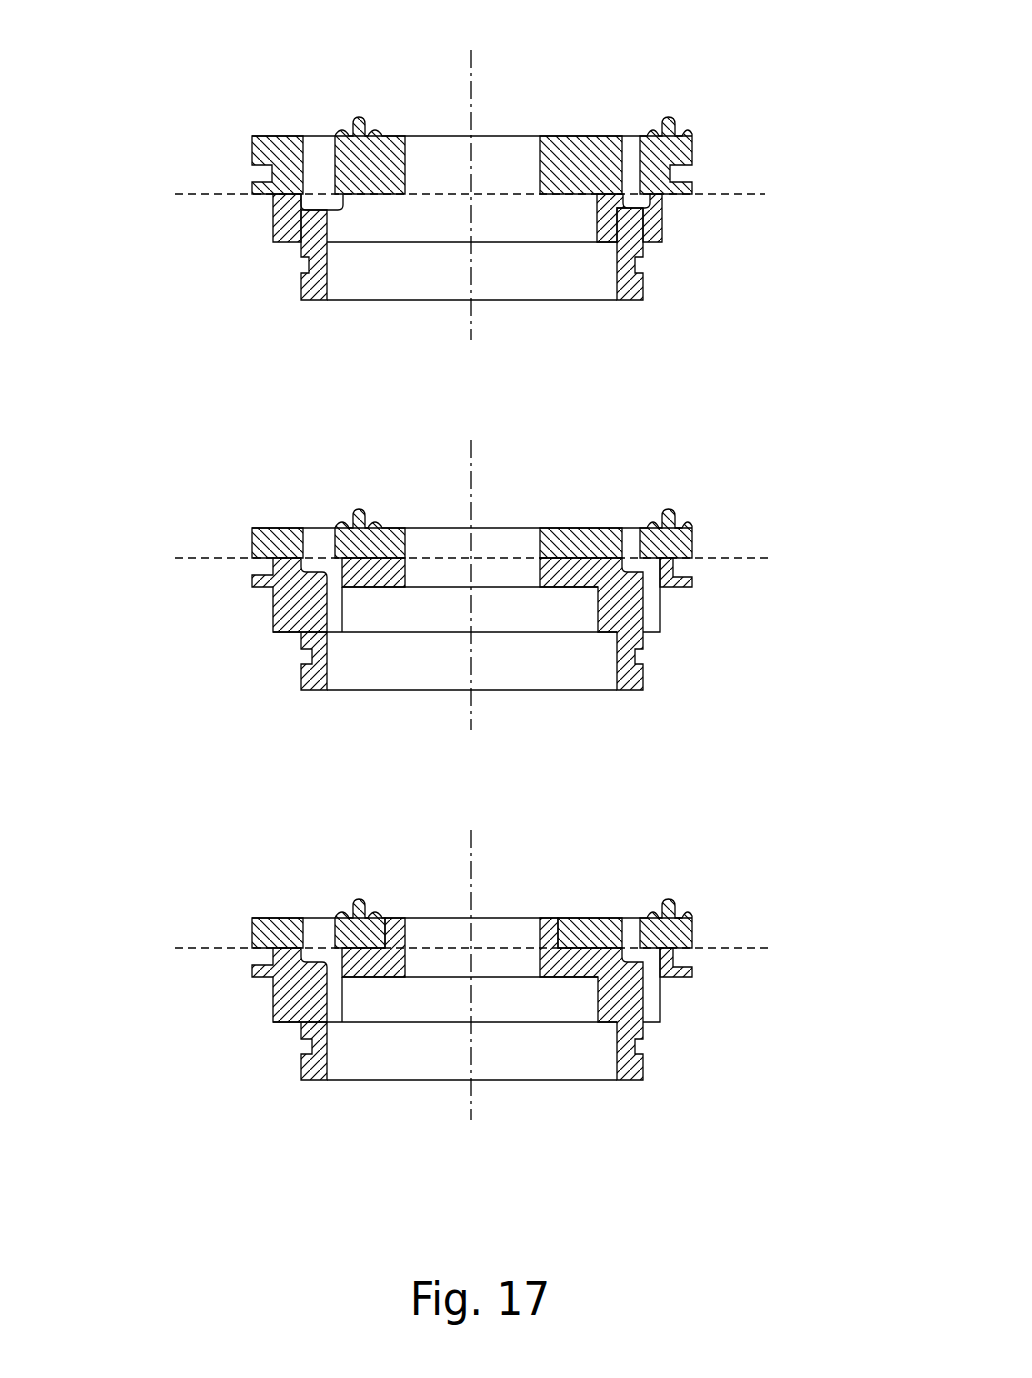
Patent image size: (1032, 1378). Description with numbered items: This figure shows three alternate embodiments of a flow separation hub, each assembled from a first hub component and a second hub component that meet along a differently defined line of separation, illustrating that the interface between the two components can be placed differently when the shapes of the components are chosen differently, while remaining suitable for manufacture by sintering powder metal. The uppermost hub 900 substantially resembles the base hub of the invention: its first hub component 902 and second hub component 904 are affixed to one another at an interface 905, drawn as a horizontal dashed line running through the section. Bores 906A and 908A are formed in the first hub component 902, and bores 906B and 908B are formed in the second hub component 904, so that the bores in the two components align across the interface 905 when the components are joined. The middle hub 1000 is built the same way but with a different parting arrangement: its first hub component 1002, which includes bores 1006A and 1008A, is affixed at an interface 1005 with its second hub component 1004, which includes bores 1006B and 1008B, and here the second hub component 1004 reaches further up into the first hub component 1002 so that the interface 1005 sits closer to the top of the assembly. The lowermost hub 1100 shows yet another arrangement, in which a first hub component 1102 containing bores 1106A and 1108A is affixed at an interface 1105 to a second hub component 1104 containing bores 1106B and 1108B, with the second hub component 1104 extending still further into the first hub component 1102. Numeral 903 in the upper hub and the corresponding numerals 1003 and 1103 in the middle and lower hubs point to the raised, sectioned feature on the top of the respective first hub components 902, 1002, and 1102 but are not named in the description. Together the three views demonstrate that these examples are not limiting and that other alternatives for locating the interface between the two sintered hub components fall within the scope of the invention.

The hub 900 is at (180, 92).
The first hub component 902 is at (693, 145).
The seal element 903 is at (360, 117).
The second hub component 904 is at (643, 280).
The interface 905 is at (203, 196).
The bore 906A is at (320, 153).
The bore 906B is at (313, 206).
The bore 908A is at (633, 142).
The bore 908B is at (642, 203).
The hub 1000 is at (182, 485).
The first hub component 1002 is at (693, 537).
The seal element 1003 is at (360, 509).
The second hub component 1004 is at (642, 672).
The interface 1005 is at (203, 560).
The bore 1006A is at (323, 545).
The bore 1006B is at (333, 582).
The bore 1008A is at (630, 538).
The bore 1008B is at (655, 607).
The hub 1100 is at (182, 875).
The first hub component 1102 is at (682, 935).
The seal element 1103 is at (360, 899).
The second hub component 1104 is at (643, 1062).
The interface 1105 is at (203, 950).
The bore 1106A is at (323, 935).
The bore 1106B is at (333, 1017).
The bore 1108A is at (632, 922).
The bore 1108B is at (653, 1000).